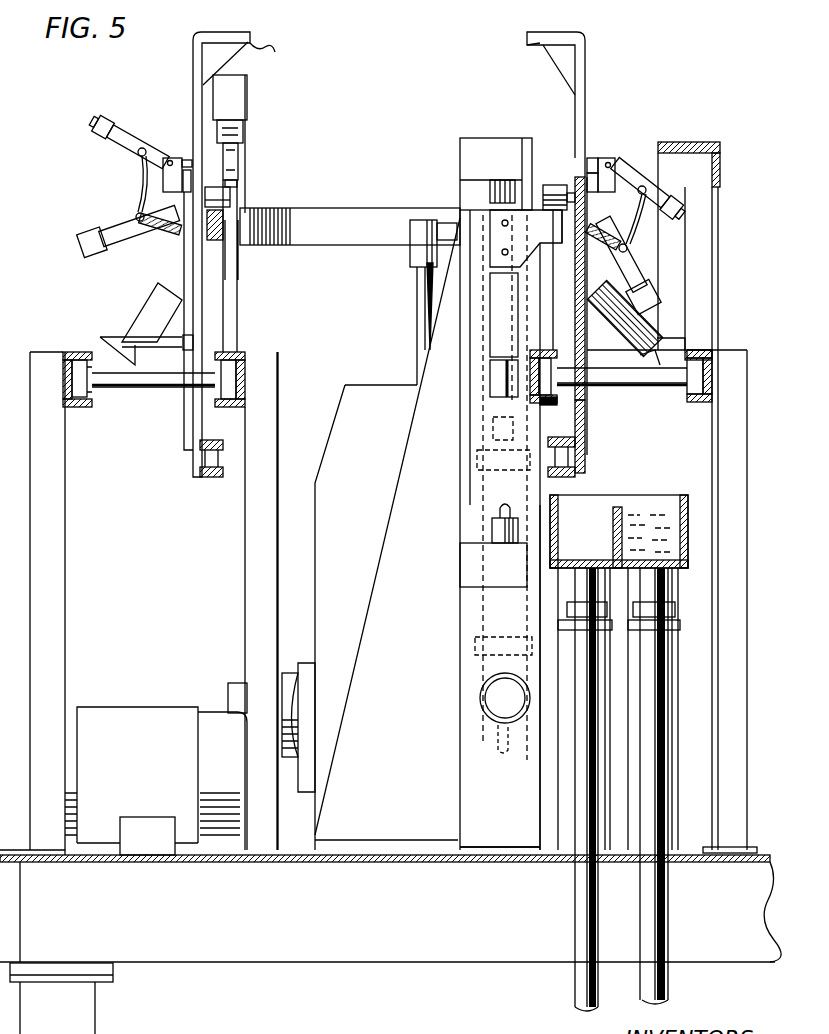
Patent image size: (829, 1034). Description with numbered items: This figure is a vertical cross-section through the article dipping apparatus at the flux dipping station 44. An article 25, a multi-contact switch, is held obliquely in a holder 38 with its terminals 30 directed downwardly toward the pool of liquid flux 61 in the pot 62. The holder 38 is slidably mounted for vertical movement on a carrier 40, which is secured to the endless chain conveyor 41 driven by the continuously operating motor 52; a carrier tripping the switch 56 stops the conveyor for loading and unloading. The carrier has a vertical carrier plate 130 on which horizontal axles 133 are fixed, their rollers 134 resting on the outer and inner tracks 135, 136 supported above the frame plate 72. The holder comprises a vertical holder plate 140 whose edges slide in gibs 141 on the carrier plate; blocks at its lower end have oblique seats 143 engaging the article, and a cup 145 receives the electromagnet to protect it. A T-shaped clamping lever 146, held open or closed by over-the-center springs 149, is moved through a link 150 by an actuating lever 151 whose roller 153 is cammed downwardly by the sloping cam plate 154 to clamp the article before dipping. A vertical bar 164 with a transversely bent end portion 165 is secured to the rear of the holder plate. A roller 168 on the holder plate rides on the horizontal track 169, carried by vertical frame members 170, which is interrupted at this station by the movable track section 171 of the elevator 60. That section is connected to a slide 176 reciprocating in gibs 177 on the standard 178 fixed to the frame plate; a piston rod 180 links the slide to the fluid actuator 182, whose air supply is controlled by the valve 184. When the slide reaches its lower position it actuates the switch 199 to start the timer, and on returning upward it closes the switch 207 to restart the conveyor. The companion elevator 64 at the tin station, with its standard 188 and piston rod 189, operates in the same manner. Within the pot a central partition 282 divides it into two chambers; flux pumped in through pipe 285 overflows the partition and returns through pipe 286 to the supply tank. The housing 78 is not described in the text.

The article 25 is at (648, 318).
The terminals 30 is at (654, 366).
The holder 38 is at (173, 156).
The carrier 40 is at (193, 479).
The chain conveyor 41 is at (223, 458).
The flux dipping station 44 is at (694, 458).
The motor 52 is at (202, 712).
The switch 56 is at (232, 104).
The elevator 60 is at (460, 148).
The liquid flux 61 is at (648, 510).
The pot 62 is at (690, 540).
The elevator 64 is at (410, 230).
The frame plate 72 is at (335, 862).
The housing 78 is at (345, 393).
The carrier plate 130 is at (200, 296).
The axles 133 is at (160, 388).
The rollers 134 is at (100, 337).
The outer track 135 is at (85, 408).
The inner track 136 is at (247, 380).
The holder plate 140 is at (585, 280).
The gibs 141 is at (183, 272).
The seats 143 is at (143, 300).
The cup 145 is at (135, 350).
The clamping lever 146 is at (125, 215).
The over-the-center springs 149 is at (157, 223).
The link 150 is at (136, 182).
The actuating lever 151 is at (117, 133).
The roller 153 is at (105, 138).
The cam plate 154 is at (705, 260).
The bar 164 is at (193, 107).
The transversely bent end portion 165 is at (540, 43).
The roller 168 is at (230, 198).
The track 169 is at (215, 245).
The vertical frame members 170 is at (230, 318).
The movable track section 171 is at (557, 235).
The slide 176 is at (500, 323).
The gibs 177 is at (520, 463).
The standard 178 is at (478, 792).
The piston rod 180 is at (502, 380).
The fluid actuator 182 is at (488, 608).
The valve 184 is at (490, 703).
The standard 188 is at (490, 748).
The piston rod 189 is at (423, 290).
The switch 199 is at (495, 530).
The switch 207 is at (490, 158).
The partition 282 is at (613, 512).
The pipe 285 is at (662, 918).
The pipe 286 is at (578, 925).